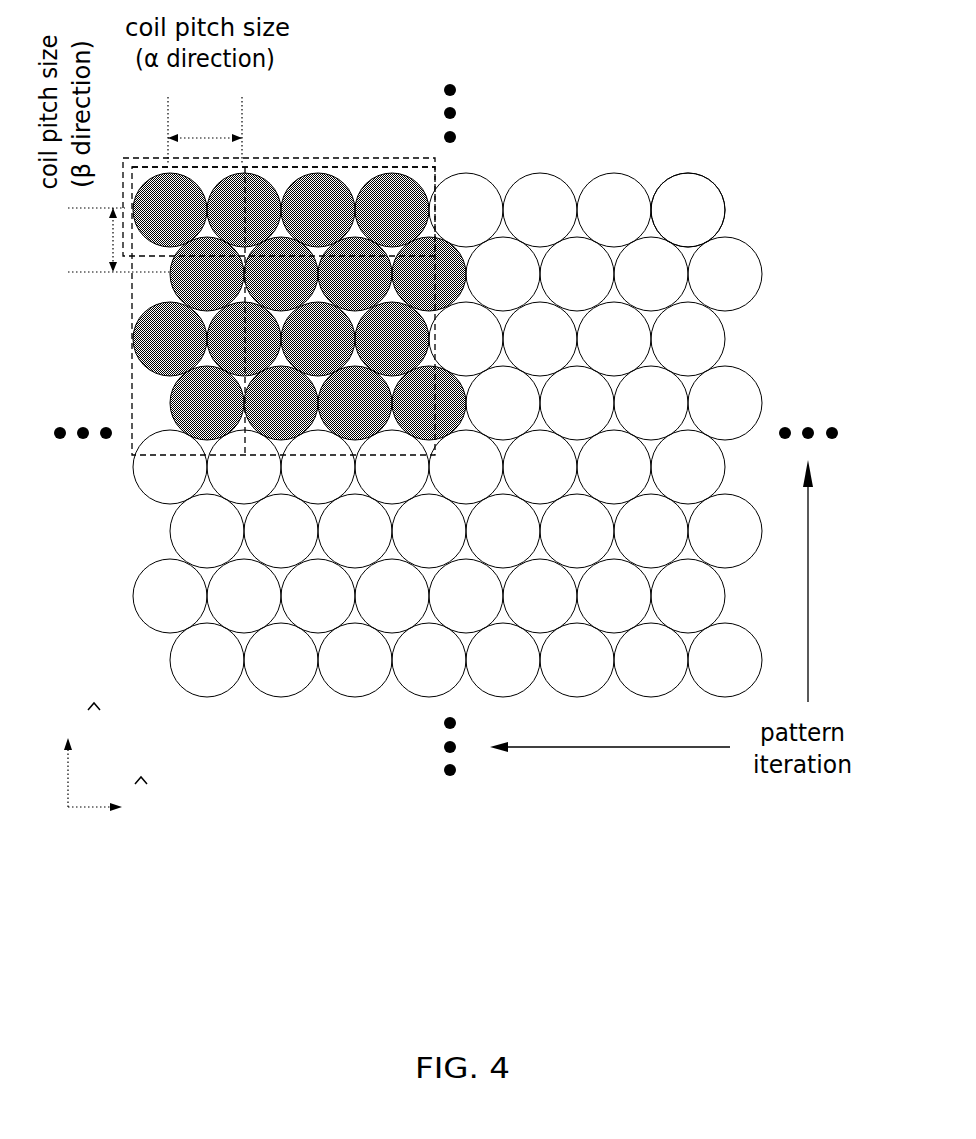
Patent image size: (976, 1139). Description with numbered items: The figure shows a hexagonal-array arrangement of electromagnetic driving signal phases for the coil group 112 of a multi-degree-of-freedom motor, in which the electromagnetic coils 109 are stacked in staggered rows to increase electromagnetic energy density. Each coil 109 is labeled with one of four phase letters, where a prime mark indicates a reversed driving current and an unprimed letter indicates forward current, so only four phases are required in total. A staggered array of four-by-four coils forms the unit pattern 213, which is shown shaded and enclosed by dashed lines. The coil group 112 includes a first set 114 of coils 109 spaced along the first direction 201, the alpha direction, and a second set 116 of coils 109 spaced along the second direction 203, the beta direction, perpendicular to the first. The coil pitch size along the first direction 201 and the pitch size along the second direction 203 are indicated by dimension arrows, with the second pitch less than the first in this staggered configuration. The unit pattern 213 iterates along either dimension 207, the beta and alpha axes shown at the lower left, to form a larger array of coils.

The electromagnetic coil 109 is at (702, 173).
The coil group 112 is at (760, 214).
The unit pattern for the hexagonal-array configuration 213 is at (317, 163).
The first set of electromagnetic coils 114 is at (348, 160).
The second set of electromagnetic coils 116 is at (131, 397).
The first direction 201 is at (229, 138).
The second direction 203 is at (112, 268).
The dimension of pattern iteration 207 is at (88, 810).